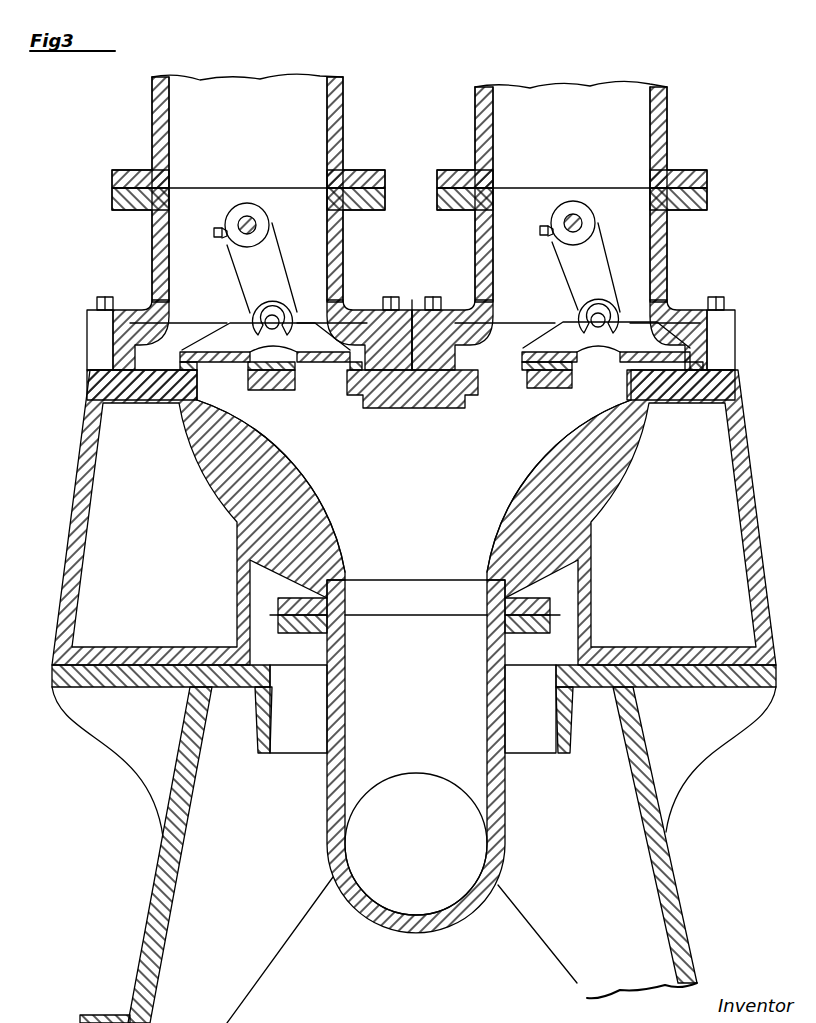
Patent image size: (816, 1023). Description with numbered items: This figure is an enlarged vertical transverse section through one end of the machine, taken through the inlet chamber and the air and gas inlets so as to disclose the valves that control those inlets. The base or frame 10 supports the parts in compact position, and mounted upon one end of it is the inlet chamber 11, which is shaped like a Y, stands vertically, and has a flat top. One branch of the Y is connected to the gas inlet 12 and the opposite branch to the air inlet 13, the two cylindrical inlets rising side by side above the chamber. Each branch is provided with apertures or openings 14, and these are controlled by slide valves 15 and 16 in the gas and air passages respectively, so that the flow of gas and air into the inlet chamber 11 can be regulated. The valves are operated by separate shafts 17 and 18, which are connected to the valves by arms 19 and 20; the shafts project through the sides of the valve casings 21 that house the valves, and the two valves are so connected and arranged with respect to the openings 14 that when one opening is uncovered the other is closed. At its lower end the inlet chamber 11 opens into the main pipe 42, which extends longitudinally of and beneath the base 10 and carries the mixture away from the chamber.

The base or frame 10 is at (160, 850).
The inlet chamber 11 is at (414, 490).
The gas inlet 12 is at (568, 225).
The air inlet 13 is at (254, 222).
The apertures or openings 14 is at (288, 402).
The slide valve 15 is at (606, 335).
The slide valve 16 is at (266, 336).
The shaft 17 is at (582, 223).
The shaft 18 is at (256, 225).
The arm 19 is at (580, 278).
The arm 20 is at (255, 279).
The valve casing 21 is at (472, 300).
The main pipe 42 is at (415, 756).